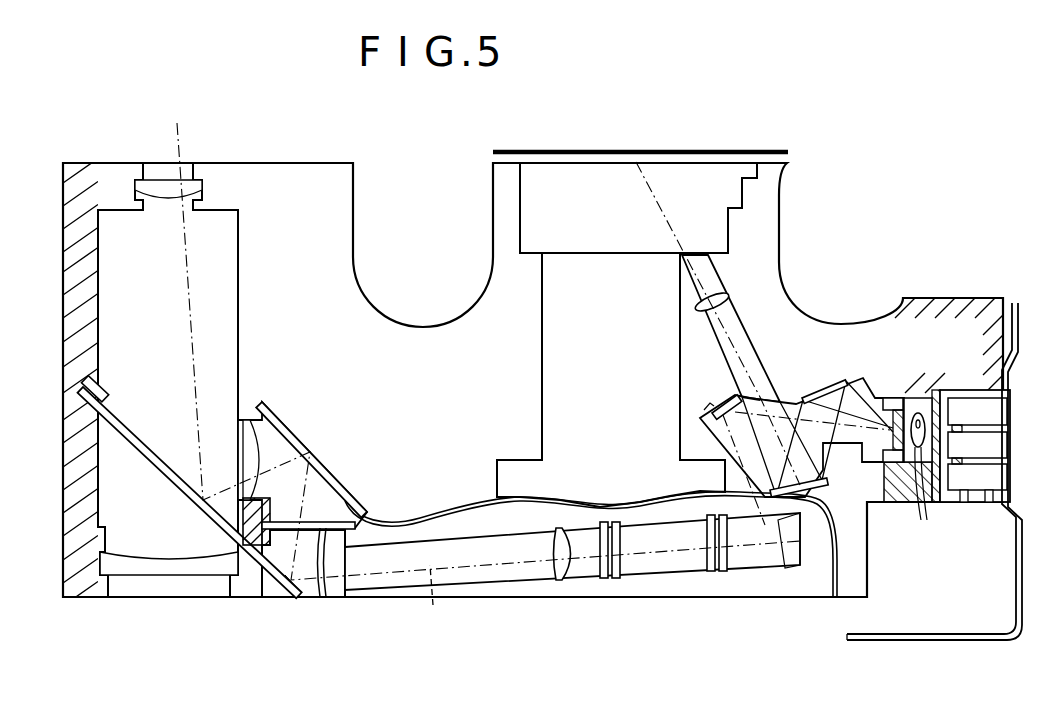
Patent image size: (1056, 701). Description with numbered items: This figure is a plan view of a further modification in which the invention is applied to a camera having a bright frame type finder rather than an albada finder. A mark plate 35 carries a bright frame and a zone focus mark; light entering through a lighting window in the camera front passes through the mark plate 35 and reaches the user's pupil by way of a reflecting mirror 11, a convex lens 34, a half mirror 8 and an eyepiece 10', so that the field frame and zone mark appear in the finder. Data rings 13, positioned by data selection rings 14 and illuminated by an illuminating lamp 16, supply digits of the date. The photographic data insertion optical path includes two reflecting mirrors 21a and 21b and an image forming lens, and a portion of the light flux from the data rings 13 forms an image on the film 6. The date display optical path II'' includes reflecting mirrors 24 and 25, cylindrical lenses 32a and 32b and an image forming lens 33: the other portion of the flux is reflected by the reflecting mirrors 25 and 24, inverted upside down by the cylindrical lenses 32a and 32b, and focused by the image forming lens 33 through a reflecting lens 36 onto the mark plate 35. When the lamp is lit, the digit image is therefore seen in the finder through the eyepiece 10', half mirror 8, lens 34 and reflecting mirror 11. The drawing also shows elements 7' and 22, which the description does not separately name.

The film 6 is at (577, 150).
The objective lens 7' is at (169, 594).
The half mirror 8 is at (155, 456).
The eyepiece 10' is at (168, 212).
The reflecting mirror 11 is at (316, 430).
The data rings 13 is at (892, 398).
The data selection rings 14 is at (1010, 420).
The illuminating lamp 16 is at (920, 412).
The reflecting mirror 21a is at (825, 388).
The reflecting mirror 21b is at (845, 492).
The lens 22 is at (697, 306).
The reflecting mirror 24 is at (706, 411).
The reflecting mirror 25 is at (788, 562).
The cylindrical lens 32a is at (724, 560).
The cylindrical lens 32b is at (612, 562).
The image forming lens 33 is at (562, 556).
The convex lens 34 is at (246, 458).
The mark plate 35 is at (320, 562).
The reflecting lens 36 is at (287, 580).
The date display optical path II'' is at (436, 602).